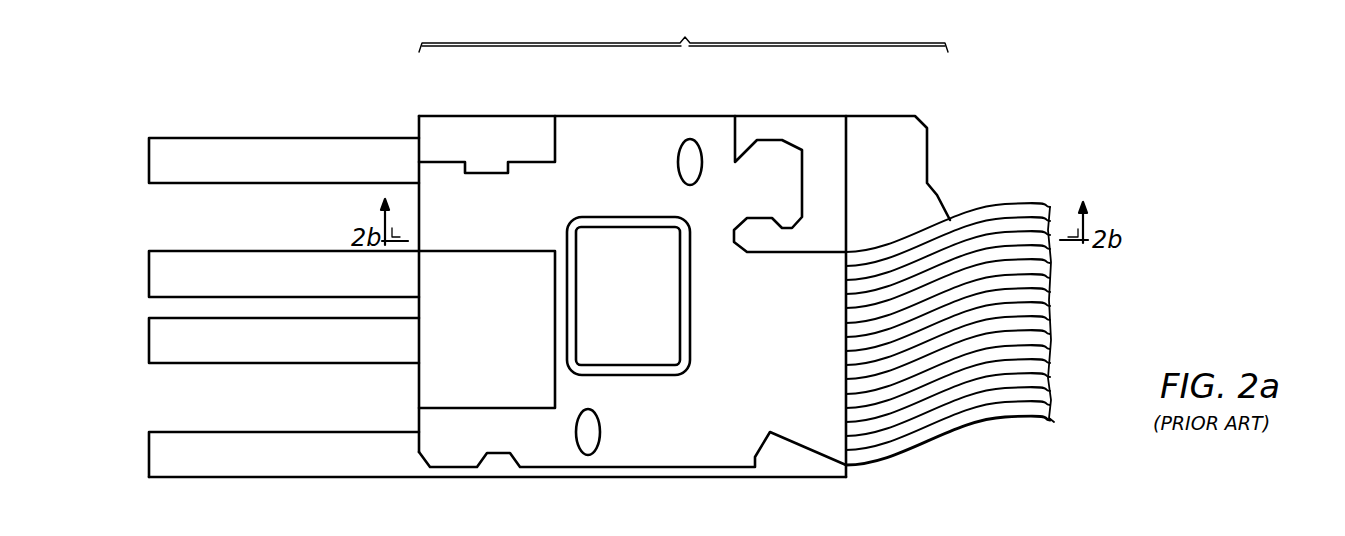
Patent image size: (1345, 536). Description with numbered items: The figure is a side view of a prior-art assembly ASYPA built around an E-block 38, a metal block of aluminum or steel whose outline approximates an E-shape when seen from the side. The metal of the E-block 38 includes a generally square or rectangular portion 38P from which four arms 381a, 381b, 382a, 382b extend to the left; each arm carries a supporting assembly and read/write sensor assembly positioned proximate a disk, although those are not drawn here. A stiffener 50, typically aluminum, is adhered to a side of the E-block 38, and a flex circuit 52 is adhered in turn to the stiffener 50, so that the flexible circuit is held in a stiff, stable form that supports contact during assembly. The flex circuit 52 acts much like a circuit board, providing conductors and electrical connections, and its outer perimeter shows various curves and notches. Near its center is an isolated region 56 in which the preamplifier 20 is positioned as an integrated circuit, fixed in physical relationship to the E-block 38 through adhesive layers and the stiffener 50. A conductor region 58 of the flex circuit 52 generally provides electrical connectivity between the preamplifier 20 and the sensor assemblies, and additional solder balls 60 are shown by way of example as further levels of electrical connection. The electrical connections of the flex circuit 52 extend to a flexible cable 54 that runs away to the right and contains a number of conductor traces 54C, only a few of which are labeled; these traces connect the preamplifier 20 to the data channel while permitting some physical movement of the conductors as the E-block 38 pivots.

The E-block 38 is at (307, 117).
The arm 381a is at (238, 138).
The arm 381b is at (149, 273).
The arm 382a is at (149, 343).
The arm 382b is at (238, 478).
The portion 38P is at (683, 29).
The stiffener 50 is at (488, 116).
The flex circuit 52 is at (610, 116).
The flexible cable 54 is at (993, 179).
The conductor traces 54C is at (1050, 297).
The isolated region 56 is at (690, 295).
The conductor region 58 is at (502, 344).
The preamplifier 20 is at (642, 306).
The solder balls 60 is at (678, 160).
The assembly ASYPA is at (1101, 112).